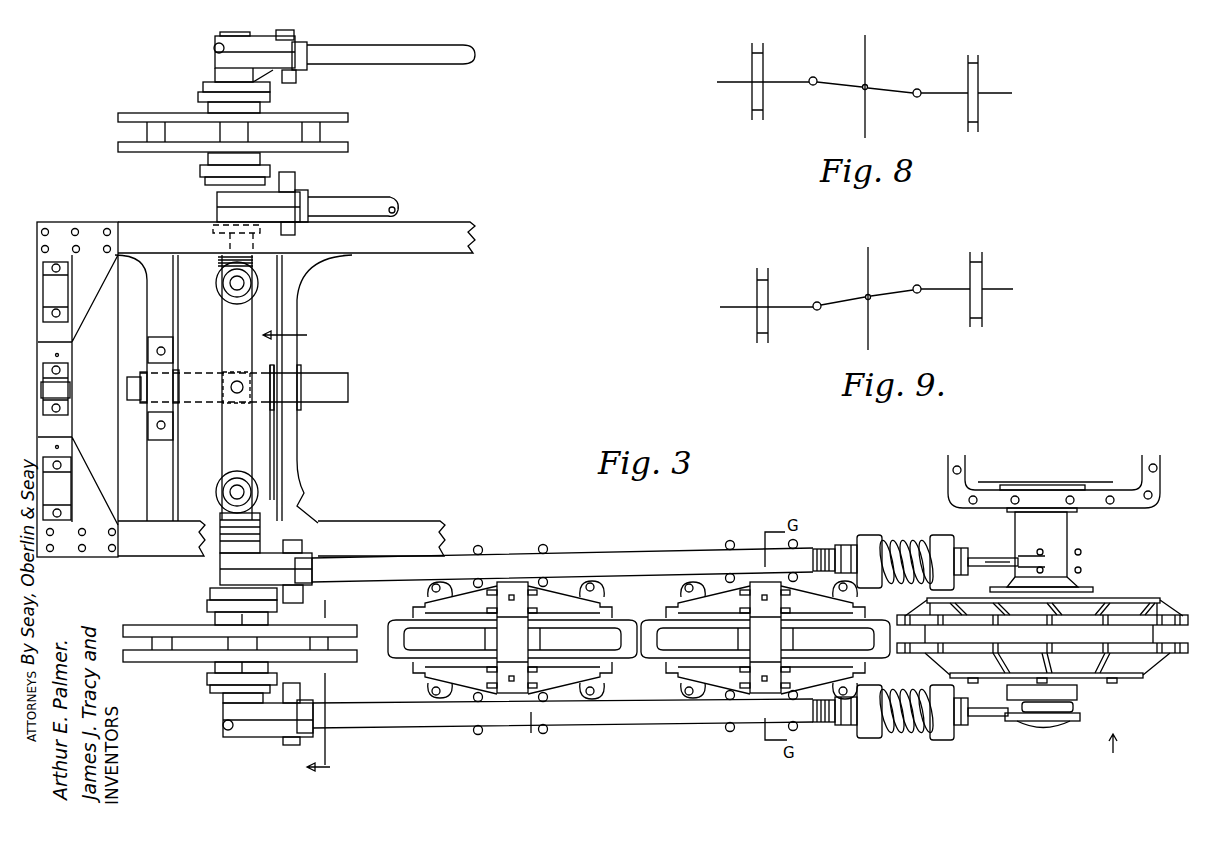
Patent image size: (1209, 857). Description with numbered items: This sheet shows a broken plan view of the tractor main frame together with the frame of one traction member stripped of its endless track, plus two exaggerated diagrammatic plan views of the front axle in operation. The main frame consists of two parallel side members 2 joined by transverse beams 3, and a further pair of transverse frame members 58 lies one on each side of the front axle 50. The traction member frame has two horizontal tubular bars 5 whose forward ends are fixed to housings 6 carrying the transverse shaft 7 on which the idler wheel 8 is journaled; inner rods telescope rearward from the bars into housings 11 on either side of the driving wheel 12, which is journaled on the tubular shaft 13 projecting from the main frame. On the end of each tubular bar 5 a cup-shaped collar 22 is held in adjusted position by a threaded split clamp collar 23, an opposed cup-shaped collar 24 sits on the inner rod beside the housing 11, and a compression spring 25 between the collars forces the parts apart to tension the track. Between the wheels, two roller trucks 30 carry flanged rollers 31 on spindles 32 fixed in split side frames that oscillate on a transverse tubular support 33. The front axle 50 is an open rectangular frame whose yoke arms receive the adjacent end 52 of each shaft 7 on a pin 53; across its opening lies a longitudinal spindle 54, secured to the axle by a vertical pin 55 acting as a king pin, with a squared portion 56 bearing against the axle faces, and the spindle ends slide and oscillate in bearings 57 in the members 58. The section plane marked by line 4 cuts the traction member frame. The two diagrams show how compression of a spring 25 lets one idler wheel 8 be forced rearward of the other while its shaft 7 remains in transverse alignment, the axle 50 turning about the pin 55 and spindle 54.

In FIG. 3, the side member 2 is at (456, 222).
In FIG. 3, the transverse beam 3 is at (37, 335).
In FIG. 3, the section line 4— 4 is at (819, 746).
In FIG. 3, the tubular bar 5 is at (402, 46).
In FIG. 3, the housing 6 is at (260, 36).
In FIG. 3, the transverse shaft 7 is at (226, 755).
In FIG. 8, the transverse shaft 7 is at (730, 84).
In FIG. 9, the transverse shaft 7 is at (737, 308).
In FIG. 3, the idler wheel 8 is at (350, 143).
In FIG. 8, the idler wheel 8 is at (752, 57).
In FIG. 9, the idler wheel 8 is at (757, 282).
In FIG. 3, the housing 11 is at (1063, 555).
In FIG. 3, the driving wheel 12 is at (1112, 592).
In FIG. 3, the tubular shaft 13 is at (1018, 527).
In FIG. 3, the cup-shaped collar 22 is at (868, 534).
In FIG. 3, the split clamp collar 23 is at (843, 545).
In FIG. 3, the cup-shaped collar 24 is at (945, 537).
In FIG. 3, the compression spring 25 is at (898, 540).
In FIG. 3, the roller truck 30 is at (470, 682).
In FIG. 3, the flanged roller 31 is at (405, 622).
In FIG. 3, the spindle 32 is at (440, 700).
In FIG. 3, the transverse tubular support 33 is at (528, 640).
In FIG. 3, the front axle 50 is at (222, 437).
In FIG. 8, the front axle 50 is at (890, 89).
In FIG. 9, the front axle 50 is at (885, 294).
In FIG. 3, the spindle end 52 is at (220, 514).
In FIG. 3, the pin 53 is at (255, 283).
In FIG. 8, the pin 53 is at (811, 85).
In FIG. 9, the pin 53 is at (815, 301).
In FIG. 3, the spindle 54 is at (325, 375).
In FIG. 8, the spindle 54 is at (864, 126).
In FIG. 9, the spindle 54 is at (870, 339).
In FIG. 3, the vertical pin 55 is at (232, 383).
In FIG. 8, the vertical pin 55 is at (867, 84).
In FIG. 9, the vertical pin 55 is at (869, 294).
In FIG. 3, the squared portion 56 is at (228, 405).
In FIG. 3, the bearing 57 is at (146, 407).
In FIG. 3, the transverse frame member 58 is at (146, 306).